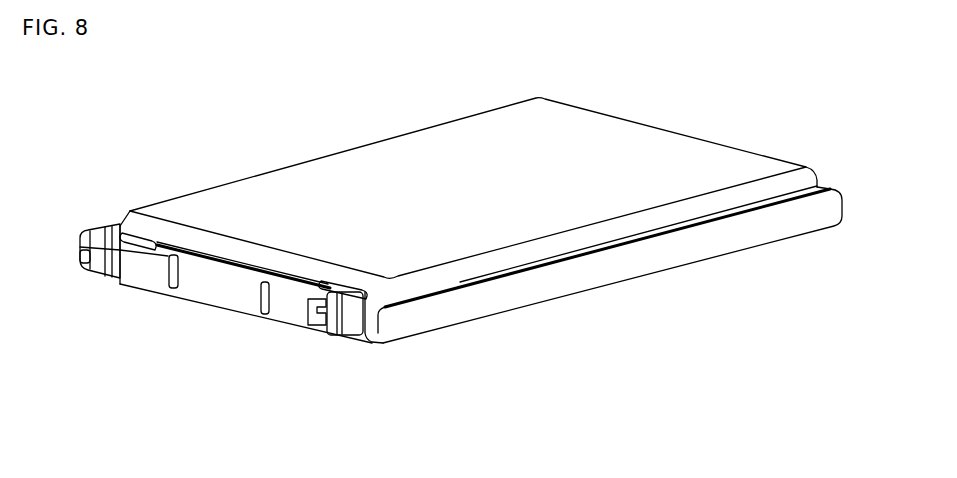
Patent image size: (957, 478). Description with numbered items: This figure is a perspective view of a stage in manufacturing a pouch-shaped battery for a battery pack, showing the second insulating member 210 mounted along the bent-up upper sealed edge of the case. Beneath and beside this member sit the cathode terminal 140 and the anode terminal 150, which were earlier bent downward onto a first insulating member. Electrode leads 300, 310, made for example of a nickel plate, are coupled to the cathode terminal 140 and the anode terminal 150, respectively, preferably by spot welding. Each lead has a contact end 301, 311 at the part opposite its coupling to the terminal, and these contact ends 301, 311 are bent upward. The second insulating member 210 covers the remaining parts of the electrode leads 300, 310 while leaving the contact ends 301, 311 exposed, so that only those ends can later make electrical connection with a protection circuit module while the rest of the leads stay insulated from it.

The cathode terminal 140 is at (307, 283).
The anode terminal 150 is at (140, 237).
The second insulating member 210 is at (222, 280).
The electrode lead 300 is at (262, 303).
The contact end 301 is at (313, 326).
The electrode lead 310 is at (172, 287).
The contact end 311 is at (93, 268).